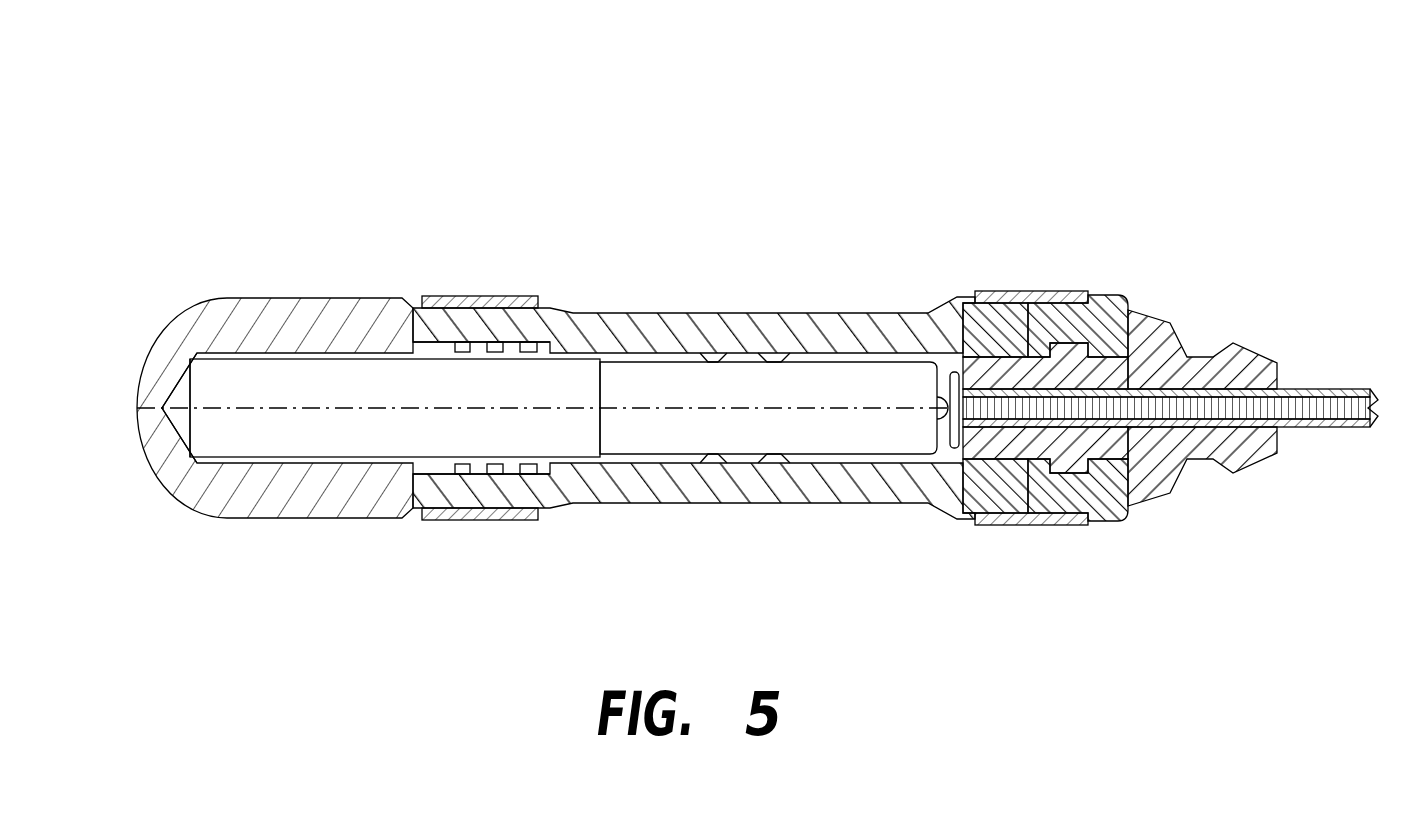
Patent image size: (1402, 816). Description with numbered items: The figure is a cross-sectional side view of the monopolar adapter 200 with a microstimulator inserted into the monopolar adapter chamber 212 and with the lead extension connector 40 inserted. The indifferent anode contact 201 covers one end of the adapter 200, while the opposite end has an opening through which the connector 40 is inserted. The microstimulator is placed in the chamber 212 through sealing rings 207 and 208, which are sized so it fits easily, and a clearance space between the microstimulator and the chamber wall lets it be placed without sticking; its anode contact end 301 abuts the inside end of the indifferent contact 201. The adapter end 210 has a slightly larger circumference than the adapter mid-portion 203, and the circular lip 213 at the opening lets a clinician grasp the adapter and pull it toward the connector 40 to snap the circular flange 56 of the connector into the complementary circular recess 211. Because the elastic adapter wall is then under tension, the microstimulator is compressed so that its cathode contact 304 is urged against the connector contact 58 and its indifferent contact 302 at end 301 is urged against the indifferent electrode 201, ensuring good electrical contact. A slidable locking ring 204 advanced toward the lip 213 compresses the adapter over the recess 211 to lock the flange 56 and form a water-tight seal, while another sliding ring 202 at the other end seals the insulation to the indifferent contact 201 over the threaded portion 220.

The monopolar adapter 200 is at (793, 168).
The indifferent anode contact 201 is at (296, 320).
The slidable locking ring 202 is at (481, 297).
The adapter mid-portion 203 is at (681, 505).
The slidable locking ring 204 is at (1032, 527).
The sealing ring 207 is at (707, 355).
The sealing ring 208 is at (777, 362).
The adapter end 210 is at (957, 298).
The circular recess 211 is at (1055, 487).
The monopolar adapter chamber 212 is at (826, 360).
The circular lip 213 is at (1113, 296).
The threaded portion 220 is at (442, 340).
The anode contact end 301 is at (140, 410).
The indifferent contact 302 is at (307, 433).
The cathode contact 304 is at (953, 470).
The lead extension connector 40 is at (1220, 320).
The circular flange 56 is at (1028, 297).
The connector contact 58 is at (955, 372).